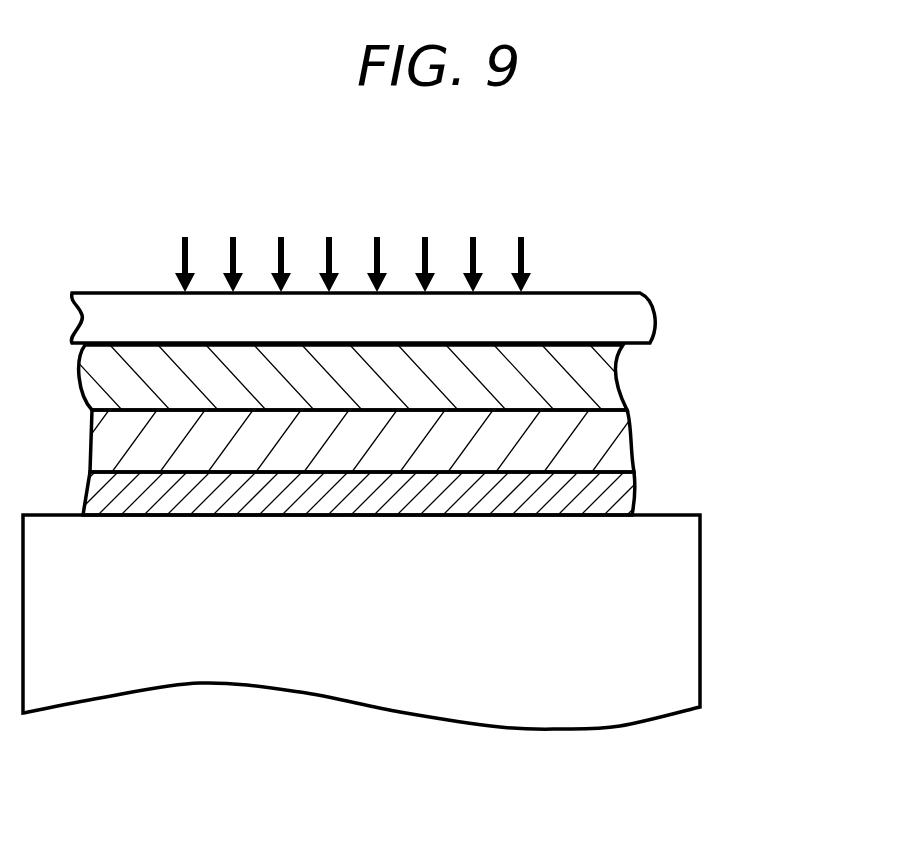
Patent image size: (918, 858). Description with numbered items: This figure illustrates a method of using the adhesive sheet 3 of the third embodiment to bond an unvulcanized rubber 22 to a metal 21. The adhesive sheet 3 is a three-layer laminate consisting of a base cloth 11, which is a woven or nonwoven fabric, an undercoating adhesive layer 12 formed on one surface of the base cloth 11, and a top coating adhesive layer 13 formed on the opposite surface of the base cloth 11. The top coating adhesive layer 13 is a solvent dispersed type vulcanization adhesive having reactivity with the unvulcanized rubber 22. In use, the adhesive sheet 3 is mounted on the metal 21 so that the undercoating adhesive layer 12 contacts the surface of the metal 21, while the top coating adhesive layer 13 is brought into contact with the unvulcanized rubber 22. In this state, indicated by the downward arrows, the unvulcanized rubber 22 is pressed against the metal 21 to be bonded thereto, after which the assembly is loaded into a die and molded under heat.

The adhesive sheet 3 is at (434, 419).
The base cloth 11 is at (613, 432).
The undercoating adhesive layer 12 is at (630, 477).
The top coating adhesive layer 13 is at (620, 356).
The metal 21 is at (690, 607).
The unvulcanized rubber 22 is at (642, 297).